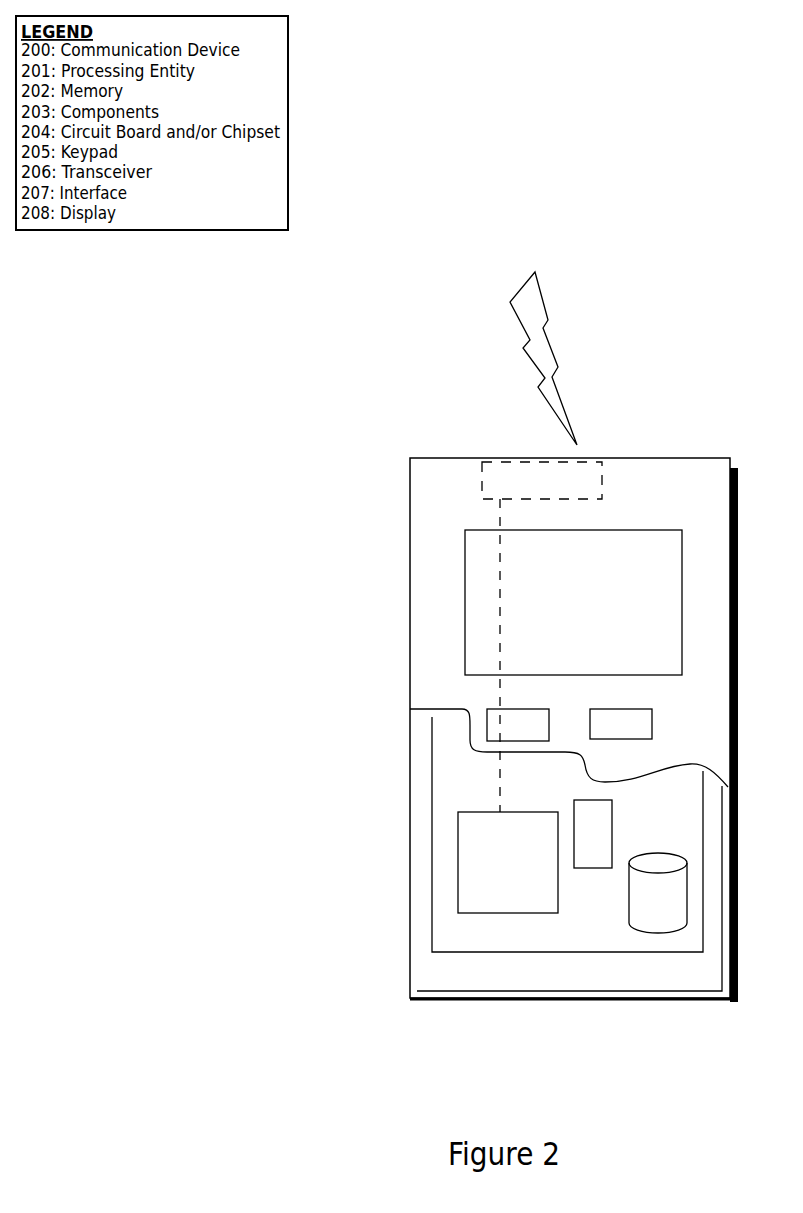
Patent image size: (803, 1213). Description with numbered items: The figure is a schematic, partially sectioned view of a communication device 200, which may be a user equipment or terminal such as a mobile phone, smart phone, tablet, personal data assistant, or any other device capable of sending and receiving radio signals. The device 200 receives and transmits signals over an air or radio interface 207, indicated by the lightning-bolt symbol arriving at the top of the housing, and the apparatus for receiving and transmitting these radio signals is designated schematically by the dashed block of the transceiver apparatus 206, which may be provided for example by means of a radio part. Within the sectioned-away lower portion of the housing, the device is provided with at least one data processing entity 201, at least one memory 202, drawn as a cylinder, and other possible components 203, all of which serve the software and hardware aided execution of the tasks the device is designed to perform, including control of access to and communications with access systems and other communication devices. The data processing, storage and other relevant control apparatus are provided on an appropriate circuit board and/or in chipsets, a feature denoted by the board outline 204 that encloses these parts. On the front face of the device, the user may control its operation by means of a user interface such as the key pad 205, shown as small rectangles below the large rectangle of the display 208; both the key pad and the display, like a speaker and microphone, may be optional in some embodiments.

The communication device 200 is at (410, 502).
The data processing entity 201 is at (467, 846).
The memory 202 is at (650, 907).
The other possible components 203 is at (592, 818).
The circuit board and/or chipset 204 is at (457, 933).
The key pad 205 is at (490, 725).
The transceiver apparatus 206 is at (590, 473).
The air or radio interface 207 is at (575, 383).
The display 208 is at (482, 587).